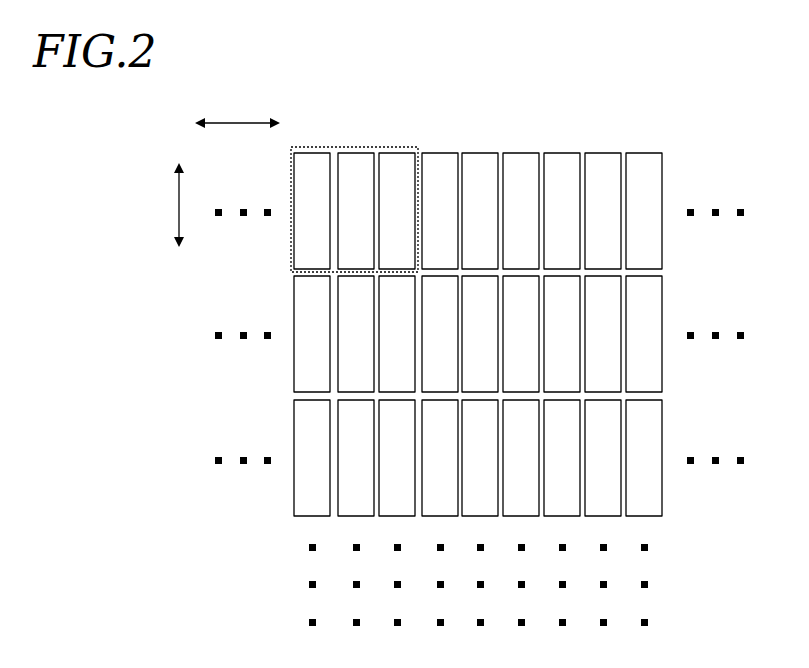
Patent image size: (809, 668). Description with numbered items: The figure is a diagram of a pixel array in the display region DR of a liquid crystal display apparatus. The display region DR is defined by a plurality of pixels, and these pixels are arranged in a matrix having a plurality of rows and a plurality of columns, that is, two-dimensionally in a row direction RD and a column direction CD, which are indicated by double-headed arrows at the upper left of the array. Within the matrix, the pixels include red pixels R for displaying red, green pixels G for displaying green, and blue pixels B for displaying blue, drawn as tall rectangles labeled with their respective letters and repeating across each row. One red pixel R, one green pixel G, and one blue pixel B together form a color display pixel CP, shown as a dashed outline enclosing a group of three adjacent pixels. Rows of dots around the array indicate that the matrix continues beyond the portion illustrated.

The display region DR is at (692, 139).
The color display pixel CP is at (372, 146).
The row direction RD is at (237, 111).
The column direction CD is at (163, 205).